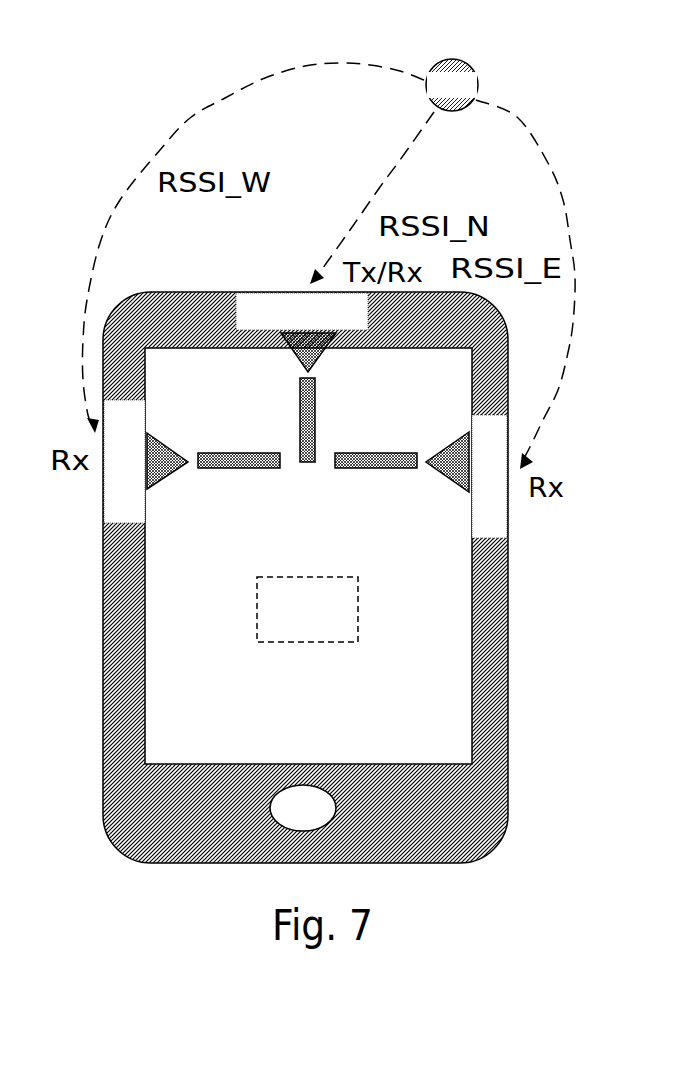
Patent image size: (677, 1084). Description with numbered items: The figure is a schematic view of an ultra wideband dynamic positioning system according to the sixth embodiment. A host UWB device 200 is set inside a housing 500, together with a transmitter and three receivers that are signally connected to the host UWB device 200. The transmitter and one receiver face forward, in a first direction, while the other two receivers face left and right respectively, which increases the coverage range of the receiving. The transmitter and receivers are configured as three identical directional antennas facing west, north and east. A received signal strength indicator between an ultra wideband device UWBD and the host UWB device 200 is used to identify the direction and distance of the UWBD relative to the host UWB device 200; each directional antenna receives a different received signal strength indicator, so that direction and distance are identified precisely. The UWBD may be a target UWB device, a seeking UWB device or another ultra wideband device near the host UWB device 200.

The host UWB device 200 is at (358, 603).
The housing 500 is at (508, 727).
The ultra wideband device UWBD is at (478, 85).